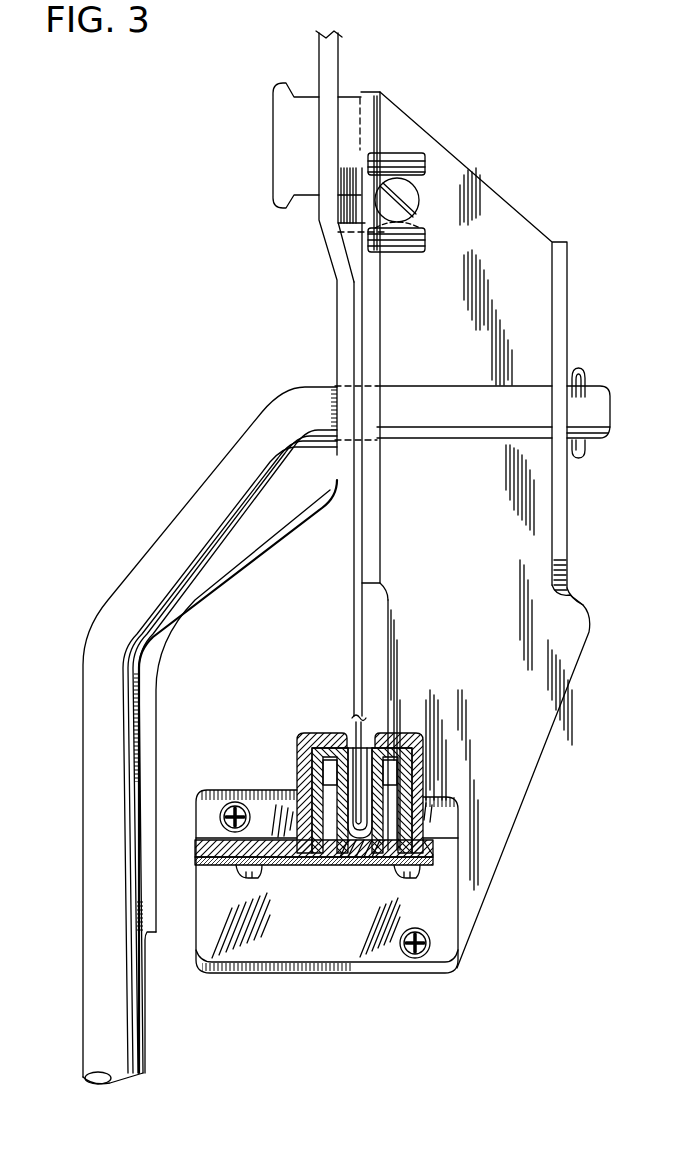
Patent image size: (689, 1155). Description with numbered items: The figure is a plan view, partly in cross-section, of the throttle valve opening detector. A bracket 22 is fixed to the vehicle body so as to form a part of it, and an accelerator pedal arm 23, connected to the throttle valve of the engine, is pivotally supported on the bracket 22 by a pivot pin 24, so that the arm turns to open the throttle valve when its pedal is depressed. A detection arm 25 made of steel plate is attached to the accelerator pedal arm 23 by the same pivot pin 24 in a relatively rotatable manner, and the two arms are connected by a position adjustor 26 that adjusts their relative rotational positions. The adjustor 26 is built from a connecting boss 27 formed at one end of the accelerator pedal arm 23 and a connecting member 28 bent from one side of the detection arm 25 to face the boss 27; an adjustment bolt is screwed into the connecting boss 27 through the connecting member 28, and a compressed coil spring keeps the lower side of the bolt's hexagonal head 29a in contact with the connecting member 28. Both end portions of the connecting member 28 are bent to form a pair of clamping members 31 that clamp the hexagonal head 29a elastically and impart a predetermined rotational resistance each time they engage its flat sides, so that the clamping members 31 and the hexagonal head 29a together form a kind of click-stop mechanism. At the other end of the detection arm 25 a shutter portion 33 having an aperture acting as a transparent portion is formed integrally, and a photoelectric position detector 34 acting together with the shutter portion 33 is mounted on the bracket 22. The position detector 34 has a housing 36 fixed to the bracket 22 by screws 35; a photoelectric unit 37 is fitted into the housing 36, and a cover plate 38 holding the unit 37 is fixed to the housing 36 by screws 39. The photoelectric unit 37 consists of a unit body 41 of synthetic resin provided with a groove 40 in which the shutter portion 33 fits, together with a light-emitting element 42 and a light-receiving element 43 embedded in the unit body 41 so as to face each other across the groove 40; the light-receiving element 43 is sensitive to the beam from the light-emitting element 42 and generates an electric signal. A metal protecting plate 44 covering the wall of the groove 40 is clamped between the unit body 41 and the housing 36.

The bracket 22 is at (522, 222).
The accelerator pedal arm 23 is at (157, 748).
The pivot pin 24 is at (432, 390).
The detection arm 25 is at (354, 643).
The position adjustor 26 is at (405, 140).
The connecting boss 27 is at (342, 218).
The connecting member 28 is at (420, 196).
The hexagonal head 29a is at (415, 210).
The clamping members 31 is at (415, 155).
The shutter portion 33 is at (350, 745).
The photoelectric position detector 34 is at (300, 730).
The screws 35 is at (224, 795).
The housing 36 is at (420, 772).
The photoelectric unit 37 is at (343, 857).
The cover plate 38 is at (295, 865).
The screws 39 is at (238, 874).
The groove 40 is at (352, 857).
The unit body 41 is at (437, 857).
The light-emitting element 42 is at (323, 770).
The light-receiving element 43 is at (395, 767).
The metal protecting plate 44 is at (353, 742).